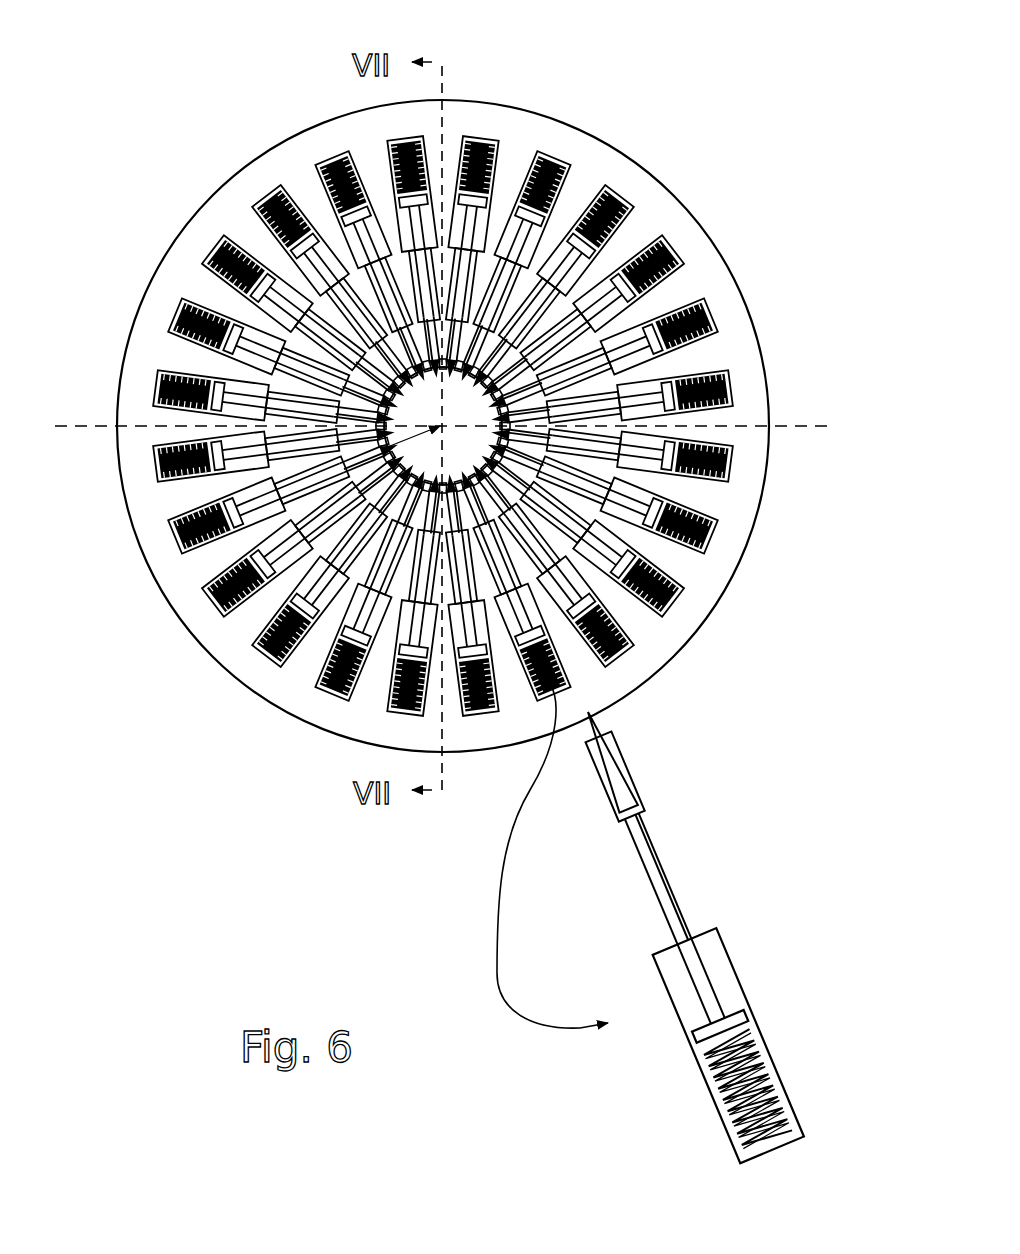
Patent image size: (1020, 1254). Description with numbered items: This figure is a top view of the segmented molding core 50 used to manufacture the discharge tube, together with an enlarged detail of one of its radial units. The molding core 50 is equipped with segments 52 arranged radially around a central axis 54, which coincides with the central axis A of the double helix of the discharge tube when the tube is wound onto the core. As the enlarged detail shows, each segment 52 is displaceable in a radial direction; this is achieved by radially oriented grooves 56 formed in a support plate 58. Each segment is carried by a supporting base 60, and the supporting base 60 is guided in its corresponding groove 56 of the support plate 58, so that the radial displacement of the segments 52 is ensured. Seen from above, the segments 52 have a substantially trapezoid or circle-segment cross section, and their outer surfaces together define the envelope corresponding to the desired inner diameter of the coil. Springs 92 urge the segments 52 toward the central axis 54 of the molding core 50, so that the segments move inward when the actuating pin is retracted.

The molding core 50 is at (655, 128).
The segments 52 is at (618, 798).
The central axis 54 is at (302, 537).
The grooves 56 is at (683, 893).
The support plate 58 is at (218, 218).
The supporting base 60 is at (697, 975).
The springs 92 is at (735, 1083).